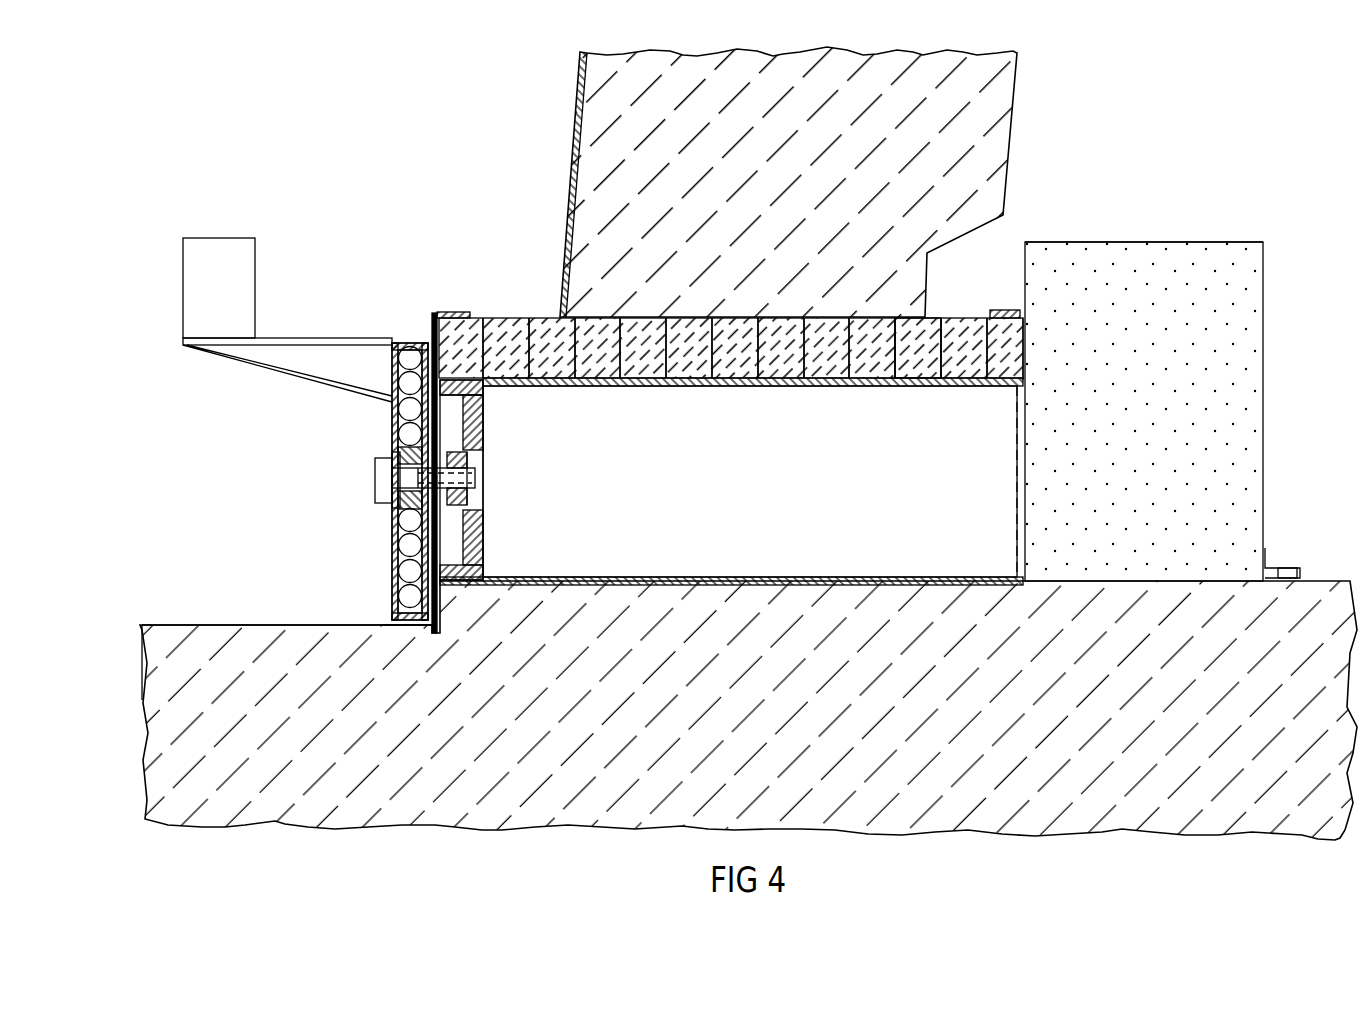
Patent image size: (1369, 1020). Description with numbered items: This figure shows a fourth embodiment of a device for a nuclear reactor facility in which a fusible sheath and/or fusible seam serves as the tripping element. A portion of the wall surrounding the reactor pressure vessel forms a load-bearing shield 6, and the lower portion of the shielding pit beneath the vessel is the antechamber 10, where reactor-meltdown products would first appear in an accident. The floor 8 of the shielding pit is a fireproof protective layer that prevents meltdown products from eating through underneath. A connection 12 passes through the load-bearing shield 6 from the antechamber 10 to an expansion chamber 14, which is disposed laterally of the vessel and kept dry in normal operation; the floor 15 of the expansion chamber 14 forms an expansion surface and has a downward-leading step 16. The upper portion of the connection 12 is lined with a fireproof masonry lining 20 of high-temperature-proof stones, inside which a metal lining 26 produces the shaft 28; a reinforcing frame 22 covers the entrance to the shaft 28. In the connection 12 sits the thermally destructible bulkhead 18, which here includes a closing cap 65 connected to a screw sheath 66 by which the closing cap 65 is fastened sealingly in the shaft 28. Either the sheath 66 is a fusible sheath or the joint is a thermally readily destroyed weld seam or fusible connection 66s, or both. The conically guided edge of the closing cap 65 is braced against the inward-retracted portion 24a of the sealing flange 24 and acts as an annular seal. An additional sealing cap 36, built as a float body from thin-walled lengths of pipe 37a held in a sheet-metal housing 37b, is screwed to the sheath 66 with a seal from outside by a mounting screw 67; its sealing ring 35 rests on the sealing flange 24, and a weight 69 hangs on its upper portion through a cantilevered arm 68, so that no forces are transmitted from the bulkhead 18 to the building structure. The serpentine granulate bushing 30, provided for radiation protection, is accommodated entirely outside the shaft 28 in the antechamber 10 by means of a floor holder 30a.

The load-bearing shield 6 is at (978, 84).
The floor 8 is at (1322, 645).
The antechamber 10 is at (1319, 394).
The connection 12 is at (600, 318).
The expansion chamber 14 is at (219, 584).
The floor of the expansion chamber 15 is at (180, 625).
The step 16 is at (395, 645).
The bulkhead 18 is at (452, 298).
The masonry lining 20 is at (955, 320).
The reinforcing frame 22 is at (1037, 320).
The sealing flange 24 is at (432, 318).
The inward-retracted portion of the sealing flange 24a is at (483, 402).
The metal lining 26 is at (795, 386).
The shaft 28 is at (709, 451).
The serpentine granulate bushing 30 is at (1258, 305).
The floor holder 30a is at (1280, 560).
The sealing ring 35 is at (428, 343).
The sealing cap 36 is at (420, 343).
The thin-walled lengths of pipe 37a is at (403, 440).
The sheet-metal housing 37b is at (403, 556).
The closing cap 65 is at (498, 518).
The screw sheath 66 is at (395, 500).
The fusible connection 66s is at (475, 495).
The mounting screw 67 is at (375, 470).
The cantilevered arm 68 is at (262, 352).
The weight 69 is at (222, 250).